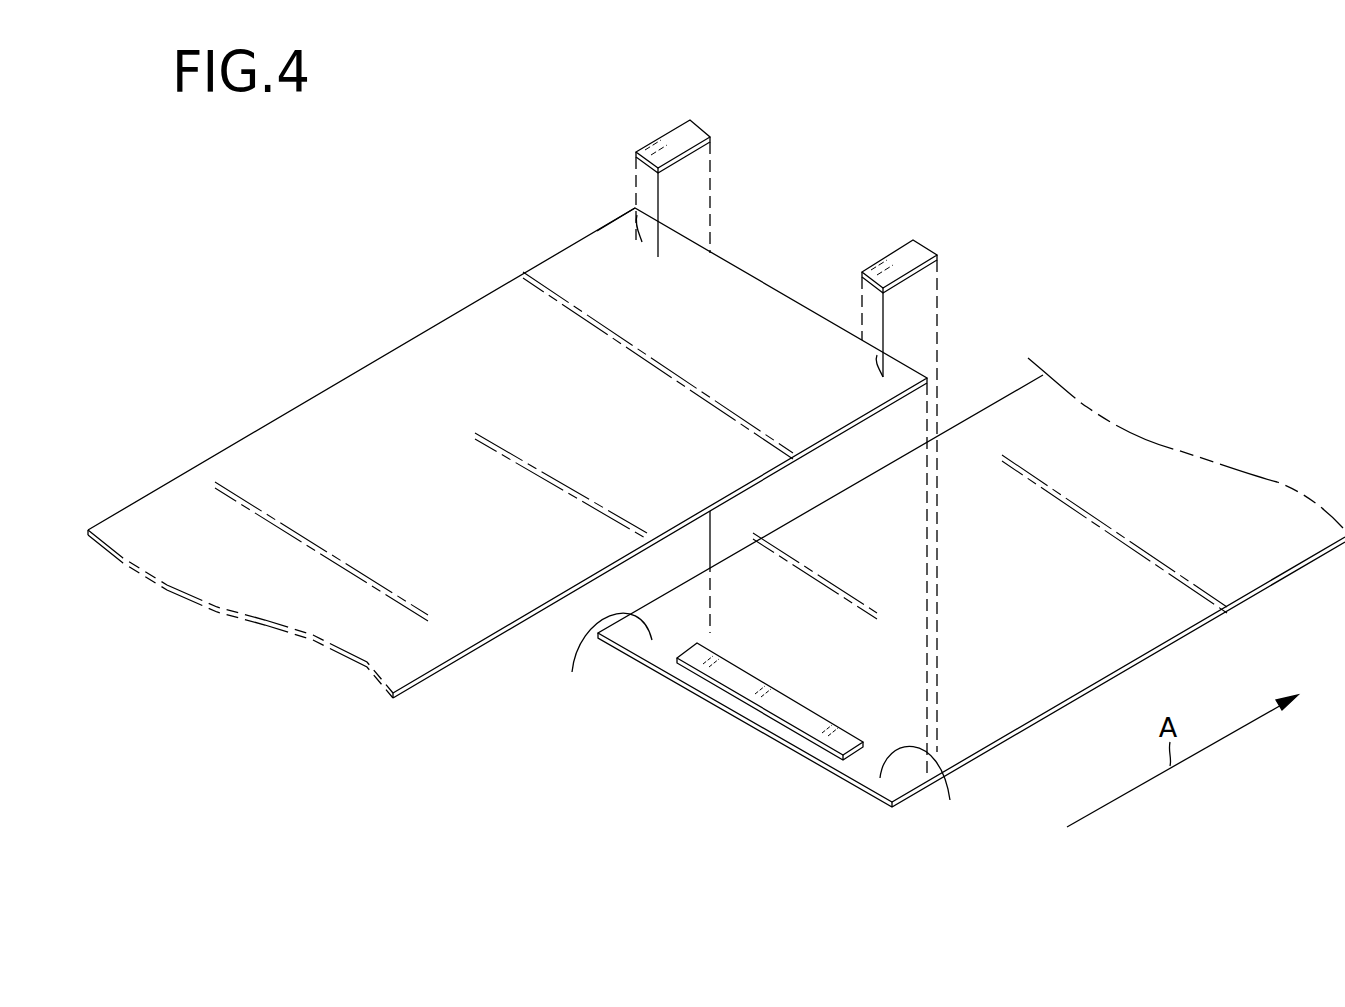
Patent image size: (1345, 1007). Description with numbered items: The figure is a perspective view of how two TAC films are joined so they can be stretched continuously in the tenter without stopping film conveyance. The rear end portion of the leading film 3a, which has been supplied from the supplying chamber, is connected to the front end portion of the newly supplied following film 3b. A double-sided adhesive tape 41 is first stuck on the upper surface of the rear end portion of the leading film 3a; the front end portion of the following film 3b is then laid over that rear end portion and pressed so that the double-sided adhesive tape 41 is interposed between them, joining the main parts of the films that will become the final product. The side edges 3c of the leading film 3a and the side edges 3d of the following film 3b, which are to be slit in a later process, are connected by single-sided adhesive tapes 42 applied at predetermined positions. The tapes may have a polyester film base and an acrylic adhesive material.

The leading film 3a is at (1158, 455).
The following film 3b is at (366, 397).
The side edges of the rear end portion of the leading film 3c is at (761, 726).
The side edges of the front end portion of the following film 3d is at (598, 232).
The double-sided adhesive tape 41 is at (793, 715).
The single-sided adhesive tape 42 is at (692, 135).